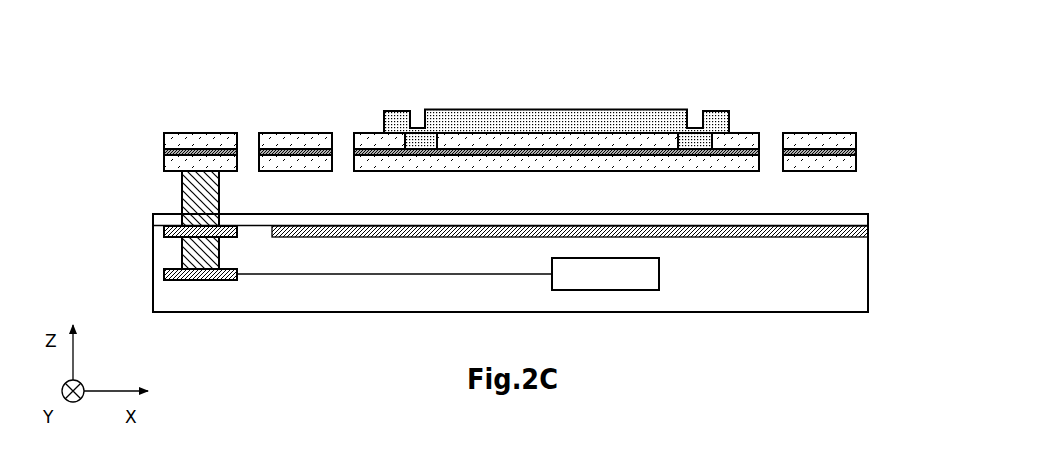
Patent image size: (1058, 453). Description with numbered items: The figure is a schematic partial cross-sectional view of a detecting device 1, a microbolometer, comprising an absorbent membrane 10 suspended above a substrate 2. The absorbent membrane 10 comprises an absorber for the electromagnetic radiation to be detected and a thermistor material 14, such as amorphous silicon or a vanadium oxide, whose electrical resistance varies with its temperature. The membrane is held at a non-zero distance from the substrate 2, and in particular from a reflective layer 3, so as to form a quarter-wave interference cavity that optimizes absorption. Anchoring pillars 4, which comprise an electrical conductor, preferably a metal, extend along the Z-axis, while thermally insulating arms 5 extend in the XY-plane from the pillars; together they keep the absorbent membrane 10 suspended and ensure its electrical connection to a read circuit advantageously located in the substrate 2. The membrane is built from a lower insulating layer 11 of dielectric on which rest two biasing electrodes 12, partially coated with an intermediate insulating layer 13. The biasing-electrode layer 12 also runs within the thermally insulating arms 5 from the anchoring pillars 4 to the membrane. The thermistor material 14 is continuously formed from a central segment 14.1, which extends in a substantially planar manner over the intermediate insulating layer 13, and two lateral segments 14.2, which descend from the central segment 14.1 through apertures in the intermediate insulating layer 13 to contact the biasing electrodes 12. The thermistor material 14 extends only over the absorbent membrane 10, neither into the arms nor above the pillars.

The detecting device 1 is at (120, 78).
The substrate 2 is at (902, 260).
The reflective layer 3 is at (879, 231).
The anchoring pillar 4 is at (172, 189).
The thermally insulating arm 5 is at (292, 108).
The absorbent membrane 10 is at (546, 133).
The lower insulating layer 11 is at (865, 162).
The biasing electrode 12 is at (865, 152).
The intermediate insulating layer 13 is at (865, 140).
The thermistor material 14 is at (556, 92).
The central segment 14.1 is at (539, 116).
The lateral segment 14.2 is at (425, 150).